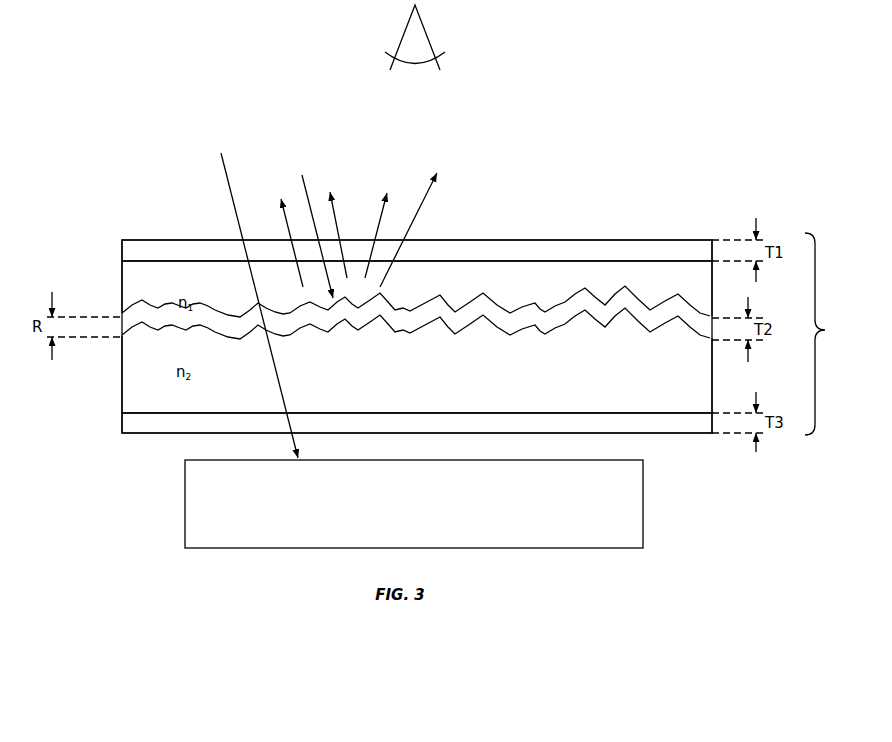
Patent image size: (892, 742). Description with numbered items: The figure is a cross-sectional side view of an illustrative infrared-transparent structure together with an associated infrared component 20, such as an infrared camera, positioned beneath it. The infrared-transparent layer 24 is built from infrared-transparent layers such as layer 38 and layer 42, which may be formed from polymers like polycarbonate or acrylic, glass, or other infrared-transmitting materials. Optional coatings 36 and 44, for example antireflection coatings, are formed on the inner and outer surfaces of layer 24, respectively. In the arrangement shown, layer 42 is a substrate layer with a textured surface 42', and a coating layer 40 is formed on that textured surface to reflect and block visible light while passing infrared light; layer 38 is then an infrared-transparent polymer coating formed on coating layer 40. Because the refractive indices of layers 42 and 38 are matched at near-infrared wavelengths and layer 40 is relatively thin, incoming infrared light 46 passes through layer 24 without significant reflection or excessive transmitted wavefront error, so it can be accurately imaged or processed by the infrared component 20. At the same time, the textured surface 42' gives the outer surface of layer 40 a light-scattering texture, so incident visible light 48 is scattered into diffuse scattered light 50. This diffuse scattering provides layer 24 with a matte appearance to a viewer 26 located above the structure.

The infrared component 20 is at (643, 497).
The infrared-transparent layer 24 is at (602, 195).
The viewer 26 is at (426, 30).
The coating 36 is at (130, 425).
The layer 38 is at (138, 403).
The coating layer 40 is at (152, 323).
The layer 42 is at (387, 288).
The textured surface 42' is at (416, 291).
The coating 44 is at (128, 250).
The infrared light 46 is at (228, 184).
The visible light 48 is at (302, 175).
The diffuse scattered light 50 is at (288, 228).